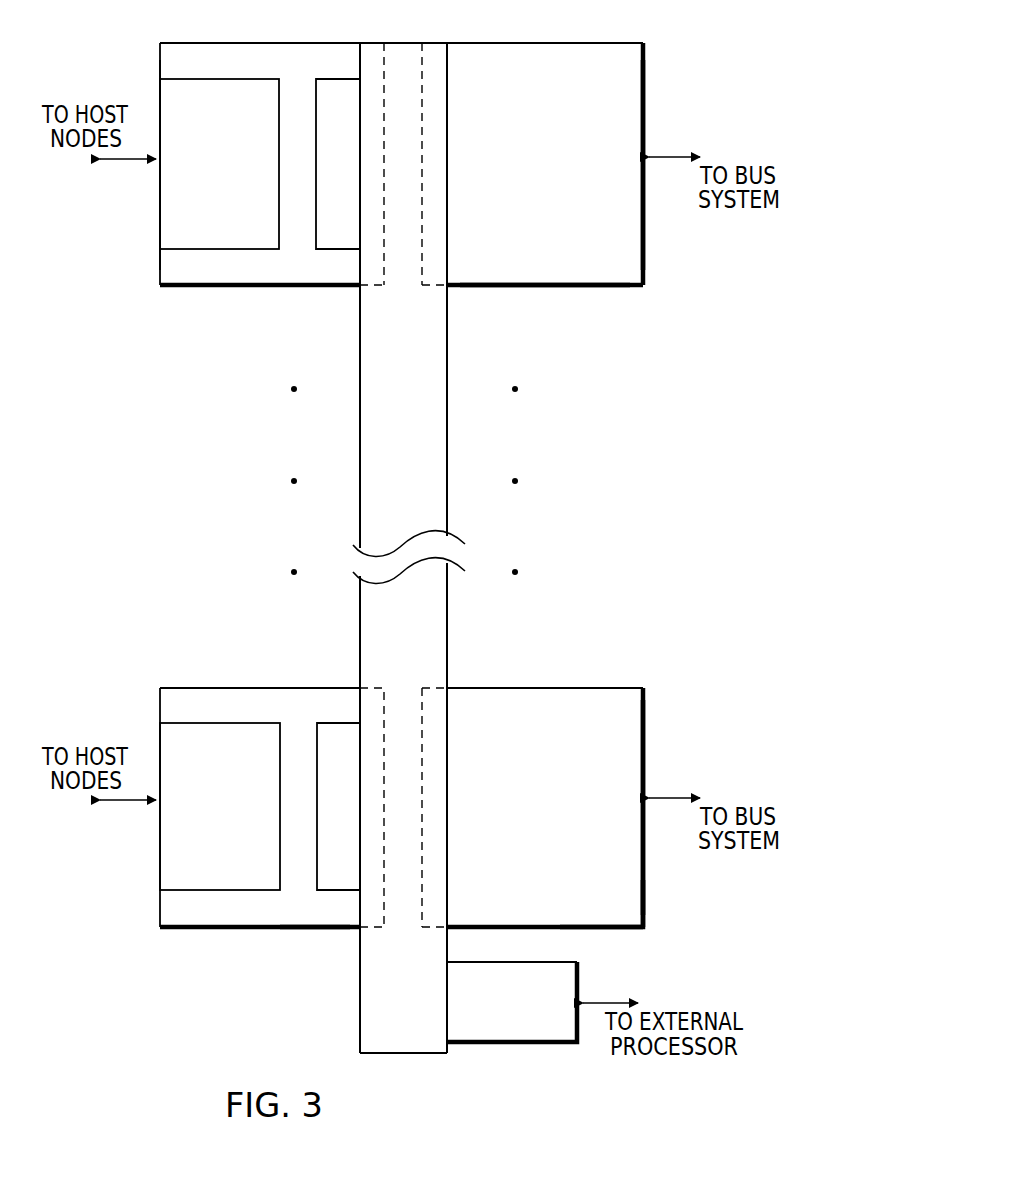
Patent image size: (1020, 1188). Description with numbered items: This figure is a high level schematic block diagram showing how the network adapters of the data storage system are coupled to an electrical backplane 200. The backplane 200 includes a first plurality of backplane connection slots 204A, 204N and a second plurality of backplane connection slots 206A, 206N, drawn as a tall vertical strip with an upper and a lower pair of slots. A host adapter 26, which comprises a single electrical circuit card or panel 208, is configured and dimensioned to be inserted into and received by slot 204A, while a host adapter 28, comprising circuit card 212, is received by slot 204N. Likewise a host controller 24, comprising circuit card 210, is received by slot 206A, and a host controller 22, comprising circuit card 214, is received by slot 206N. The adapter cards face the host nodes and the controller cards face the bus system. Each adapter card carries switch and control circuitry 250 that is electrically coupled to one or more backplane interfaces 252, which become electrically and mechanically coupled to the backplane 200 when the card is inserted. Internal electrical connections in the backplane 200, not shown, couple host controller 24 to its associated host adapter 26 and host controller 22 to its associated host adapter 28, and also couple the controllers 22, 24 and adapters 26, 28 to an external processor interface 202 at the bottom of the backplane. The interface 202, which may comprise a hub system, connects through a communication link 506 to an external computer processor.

The host controller 22 is at (651, 738).
The host controller 24 is at (651, 95).
The host adapter 26 is at (259, 40).
The host adapter 28 is at (259, 684).
The backplane 200 is at (449, 620).
The external processor interface 202 is at (522, 1045).
The backplane connection slot 204A is at (384, 287).
The backplane connection slot 204N is at (393, 667).
The backplane connection slot 206A is at (422, 287).
The backplane connection slot 206N is at (432, 686).
The host adapter card 208 is at (168, 42).
The host controller card 210 is at (600, 288).
The host adapter card 212 is at (295, 930).
The host controller card 214 is at (646, 905).
The switch and control circuitry 250 is at (213, 252).
The backplane interfaces 252 is at (325, 252).
The communication link 506 is at (618, 1000).